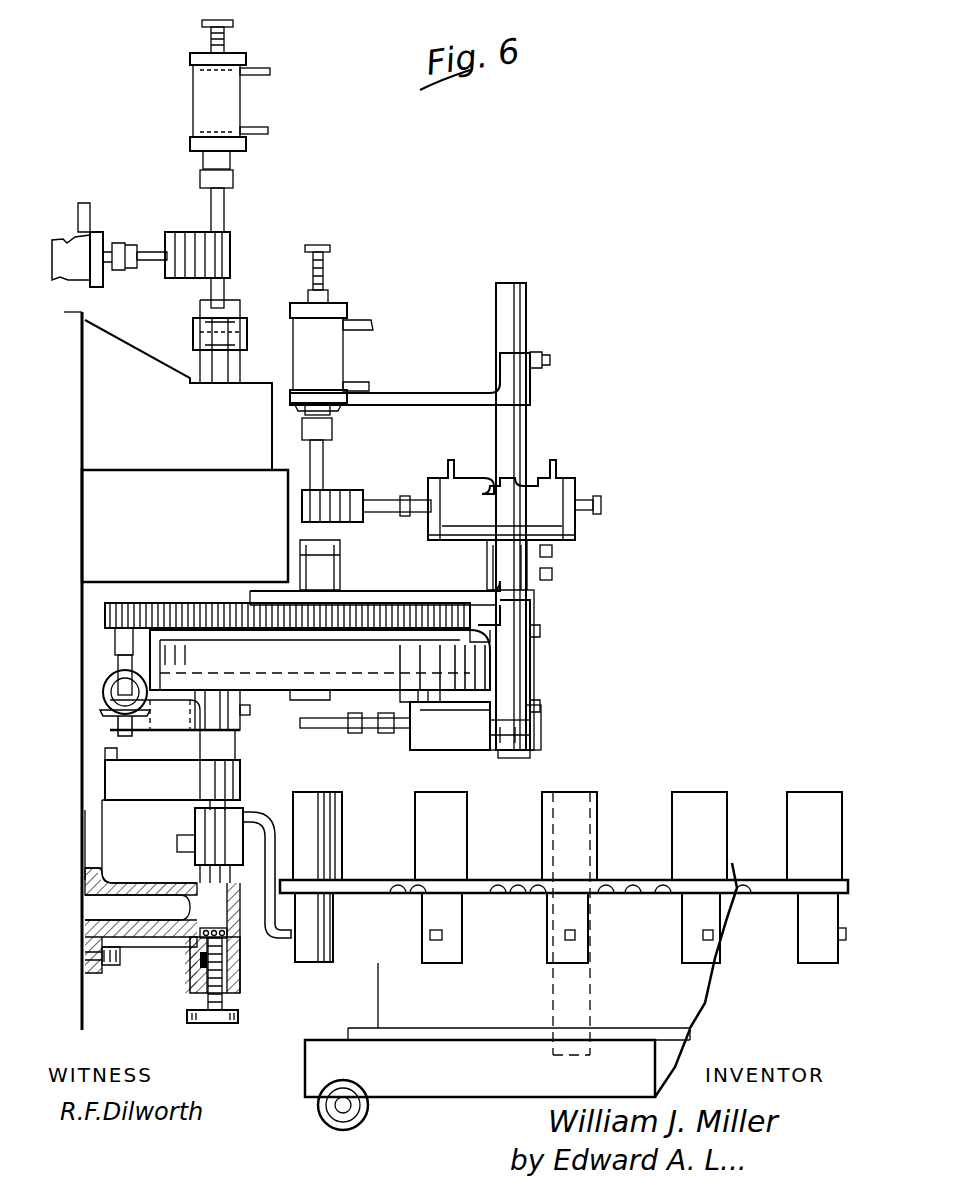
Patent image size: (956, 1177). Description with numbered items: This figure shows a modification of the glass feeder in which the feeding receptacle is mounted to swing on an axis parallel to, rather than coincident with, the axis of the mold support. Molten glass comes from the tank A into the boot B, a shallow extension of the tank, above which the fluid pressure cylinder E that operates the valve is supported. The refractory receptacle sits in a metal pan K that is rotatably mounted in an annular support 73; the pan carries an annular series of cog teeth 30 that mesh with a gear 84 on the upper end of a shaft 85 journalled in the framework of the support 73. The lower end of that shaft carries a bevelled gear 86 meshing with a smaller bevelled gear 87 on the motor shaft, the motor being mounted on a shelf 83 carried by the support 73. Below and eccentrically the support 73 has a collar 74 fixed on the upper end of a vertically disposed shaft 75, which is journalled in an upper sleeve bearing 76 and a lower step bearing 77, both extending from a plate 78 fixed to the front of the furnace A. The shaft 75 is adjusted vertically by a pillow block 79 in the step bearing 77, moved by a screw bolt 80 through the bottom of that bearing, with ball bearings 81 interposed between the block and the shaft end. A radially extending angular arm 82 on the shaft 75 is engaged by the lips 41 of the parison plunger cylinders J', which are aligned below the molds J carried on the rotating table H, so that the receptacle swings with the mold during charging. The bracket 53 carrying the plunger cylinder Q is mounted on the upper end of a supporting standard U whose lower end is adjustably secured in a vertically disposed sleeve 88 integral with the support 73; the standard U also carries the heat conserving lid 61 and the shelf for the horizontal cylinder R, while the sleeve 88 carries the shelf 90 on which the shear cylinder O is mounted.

The fluid pressure cylinder E is at (240, 104).
The tank A is at (164, 671).
The boot B is at (185, 526).
The fluid pressure cylinder Q is at (360, 383).
The support 53 is at (412, 400).
The supporting standard U is at (526, 440).
The fluid pressure cylinder mechanism R is at (514, 500).
The heat conserving lid 61 is at (410, 598).
The cog teeth 30 is at (158, 603).
The gear 84 is at (123, 603).
The annular support 73 is at (320, 660).
The pan K is at (485, 628).
The vertically disposed sleeve 88 is at (549, 670).
The shear cylinder O is at (415, 724).
The shelf 90 is at (493, 740).
The shaft 85 is at (118, 668).
The smaller bevelled gear 87 is at (115, 697).
The bevelled gear 86 is at (108, 717).
The shelf 83 is at (166, 732).
The collar 74 is at (240, 738).
The upper sleeve bearing 76 is at (238, 778).
The vertically disposed shaft 75 is at (233, 810).
The radially extending angular arm 82 is at (226, 845).
The ball bearings 81 is at (238, 946).
The plate 78 is at (97, 850).
The lower step bearing 77 is at (192, 973).
The pillow block 79 is at (210, 947).
The screw bolt 80 is at (205, 1000).
The mold support or table H is at (627, 876).
The molds J is at (567, 836).
The parison plunger cylinders J' is at (566, 928).
The lip 41 is at (445, 936).